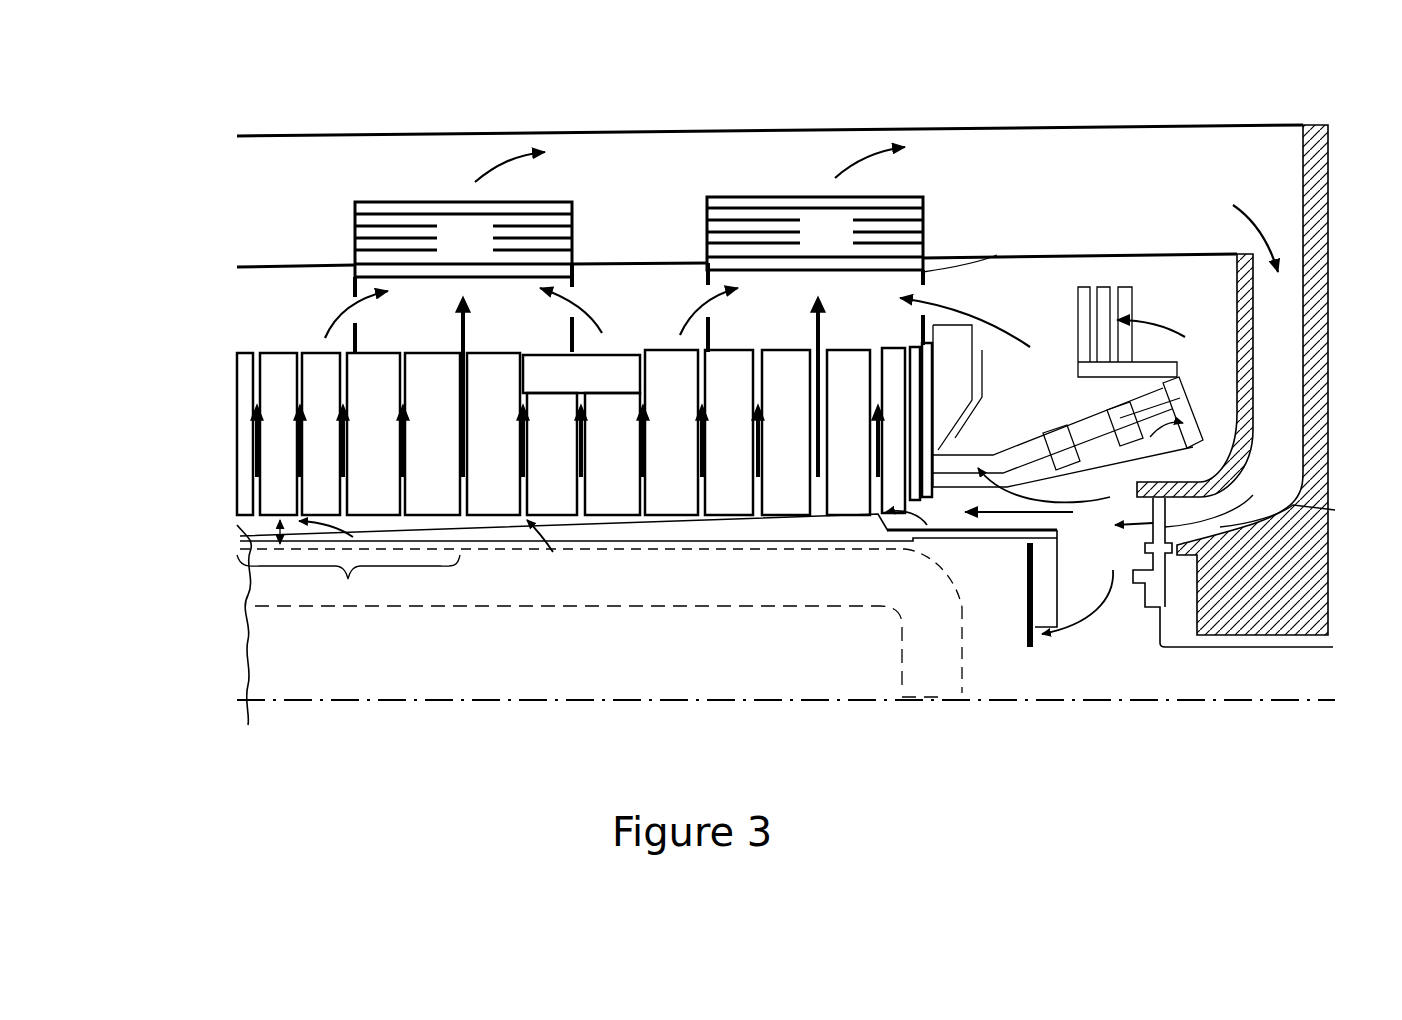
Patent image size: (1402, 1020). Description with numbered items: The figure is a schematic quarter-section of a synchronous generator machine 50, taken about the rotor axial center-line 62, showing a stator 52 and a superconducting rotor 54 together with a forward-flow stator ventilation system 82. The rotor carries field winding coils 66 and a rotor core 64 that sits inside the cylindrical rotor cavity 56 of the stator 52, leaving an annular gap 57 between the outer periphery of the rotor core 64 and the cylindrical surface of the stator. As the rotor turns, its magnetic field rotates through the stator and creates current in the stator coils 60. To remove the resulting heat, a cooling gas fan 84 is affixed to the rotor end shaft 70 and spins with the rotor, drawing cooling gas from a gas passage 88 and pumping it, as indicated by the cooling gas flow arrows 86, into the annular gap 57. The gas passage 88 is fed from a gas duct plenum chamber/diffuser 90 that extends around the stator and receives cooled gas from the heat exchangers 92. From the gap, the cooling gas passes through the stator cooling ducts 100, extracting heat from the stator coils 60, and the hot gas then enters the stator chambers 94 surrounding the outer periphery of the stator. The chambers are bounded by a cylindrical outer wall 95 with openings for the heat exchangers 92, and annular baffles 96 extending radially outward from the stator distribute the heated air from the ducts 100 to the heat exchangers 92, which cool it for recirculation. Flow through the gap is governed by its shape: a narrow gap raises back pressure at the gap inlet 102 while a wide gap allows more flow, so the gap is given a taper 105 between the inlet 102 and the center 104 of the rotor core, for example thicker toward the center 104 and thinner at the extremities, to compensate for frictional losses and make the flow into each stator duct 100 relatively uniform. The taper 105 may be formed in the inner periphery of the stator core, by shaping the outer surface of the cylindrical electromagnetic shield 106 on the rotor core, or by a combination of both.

The synchronous generator machine 50 is at (193, 310).
The stator 52 is at (584, 429).
The superconducting rotor 54 is at (1263, 685).
The cylindrical rotor cavity 56 is at (240, 523).
The annular gap 57 is at (248, 538).
The stator coils 60 is at (1032, 448).
The rotor axial center-line 62 is at (330, 642).
The rotor core 64 is at (423, 677).
The field winding coil 66 is at (944, 634).
The end shaft 70 is at (1160, 668).
The stator ventilation system 82 is at (1235, 178).
The cooling gas fan 84 is at (1335, 510).
The cooling gas flow 86 is at (863, 153).
The gas passage 88 is at (1287, 330).
The gas duct plenum chamber/diffuser 90 is at (978, 189).
The heat exchanger 92 is at (639, 274).
The stator chamber 94 is at (436, 322).
The cylindrical outer wall 95 is at (603, 263).
The annular baffle 96 is at (573, 276).
The stator cooling duct 100 is at (296, 346).
The gap inlet 102 is at (905, 518).
The center 104 is at (348, 582).
The taper 105 is at (719, 528).
The electromagnetic shield 106 is at (486, 531).